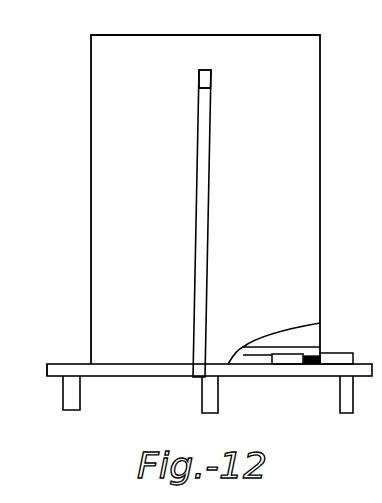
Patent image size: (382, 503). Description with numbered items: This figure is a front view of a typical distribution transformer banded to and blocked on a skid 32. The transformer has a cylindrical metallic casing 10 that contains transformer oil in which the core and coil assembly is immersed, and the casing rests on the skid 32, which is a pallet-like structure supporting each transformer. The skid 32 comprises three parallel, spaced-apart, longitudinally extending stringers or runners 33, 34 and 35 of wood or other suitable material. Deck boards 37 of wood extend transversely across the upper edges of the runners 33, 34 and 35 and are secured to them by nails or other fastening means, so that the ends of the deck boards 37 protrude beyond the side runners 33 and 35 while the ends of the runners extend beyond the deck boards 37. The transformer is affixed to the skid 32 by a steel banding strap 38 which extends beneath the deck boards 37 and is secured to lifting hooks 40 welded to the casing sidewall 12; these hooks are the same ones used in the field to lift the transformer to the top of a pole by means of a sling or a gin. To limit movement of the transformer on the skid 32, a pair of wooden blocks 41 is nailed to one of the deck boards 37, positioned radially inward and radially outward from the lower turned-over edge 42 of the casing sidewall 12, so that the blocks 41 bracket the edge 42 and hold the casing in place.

The cylindrical metallic casing 10 is at (95, 211).
The casing sidewall 12 is at (320, 325).
The skid 32 is at (62, 364).
The runner 33 is at (80, 400).
The runner 34 is at (205, 398).
The runner 35 is at (346, 400).
The deck board 37 is at (48, 370).
The steel banding strap 38 is at (208, 143).
The lifting hook 40 is at (211, 79).
The wooden block 41 is at (322, 340).
The lower turned-over edge 42 is at (306, 365).